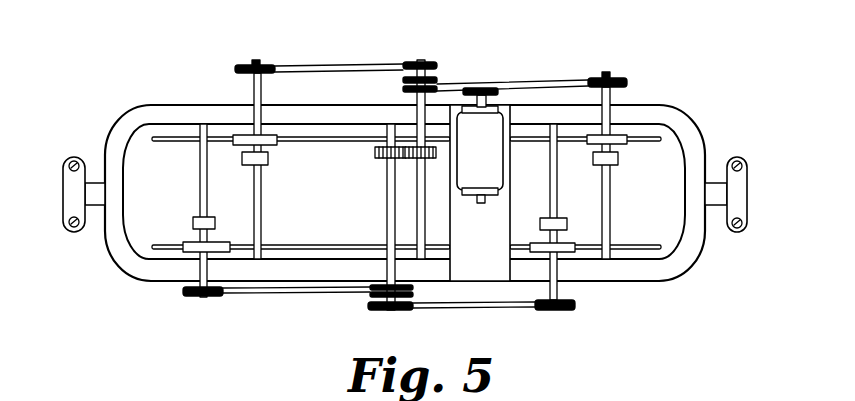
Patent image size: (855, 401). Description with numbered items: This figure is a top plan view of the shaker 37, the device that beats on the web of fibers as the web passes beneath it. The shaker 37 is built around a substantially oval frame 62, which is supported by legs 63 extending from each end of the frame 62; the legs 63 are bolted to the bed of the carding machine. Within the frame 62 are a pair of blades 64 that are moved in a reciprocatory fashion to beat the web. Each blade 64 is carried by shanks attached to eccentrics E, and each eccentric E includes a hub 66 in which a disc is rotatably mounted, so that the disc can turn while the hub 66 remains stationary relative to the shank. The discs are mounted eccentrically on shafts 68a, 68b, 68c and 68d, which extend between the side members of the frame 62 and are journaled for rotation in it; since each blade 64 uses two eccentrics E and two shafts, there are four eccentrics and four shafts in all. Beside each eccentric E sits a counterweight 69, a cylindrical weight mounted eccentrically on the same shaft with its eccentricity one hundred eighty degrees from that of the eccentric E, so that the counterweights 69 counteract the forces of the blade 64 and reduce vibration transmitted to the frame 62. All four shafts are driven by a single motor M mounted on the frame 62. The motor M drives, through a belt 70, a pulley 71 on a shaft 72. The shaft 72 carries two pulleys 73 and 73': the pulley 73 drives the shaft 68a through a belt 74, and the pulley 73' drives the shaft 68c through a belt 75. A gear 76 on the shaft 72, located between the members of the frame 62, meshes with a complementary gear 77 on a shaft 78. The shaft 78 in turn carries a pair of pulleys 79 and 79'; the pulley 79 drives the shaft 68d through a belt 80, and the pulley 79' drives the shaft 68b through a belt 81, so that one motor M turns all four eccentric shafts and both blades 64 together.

The shaker 37 is at (183, 112).
The frame 62 is at (673, 125).
The legs 63 is at (77, 193).
The blades 64 is at (343, 122).
The hub 66 is at (267, 147).
The shaft 68a is at (610, 193).
The shaft 68b is at (553, 172).
The shaft 68c is at (262, 227).
The shaft 68d is at (197, 187).
The counterweight 69 is at (263, 163).
The belt 70 is at (480, 151).
The pulley 71 is at (405, 99).
The shaft 72 is at (423, 229).
The pulley 73 is at (440, 70).
The pulley 73' is at (412, 51).
The belt 74 is at (568, 78).
The belt 75 is at (345, 67).
The gear 76 is at (436, 152).
The gear 77 is at (373, 148).
The shaft 78 is at (387, 210).
The pulley 79 is at (380, 277).
The pulley 79' is at (402, 322).
The belt 80 is at (293, 295).
The belt 81 is at (483, 306).
The motor M is at (498, 178).
The eccentric E is at (233, 147).